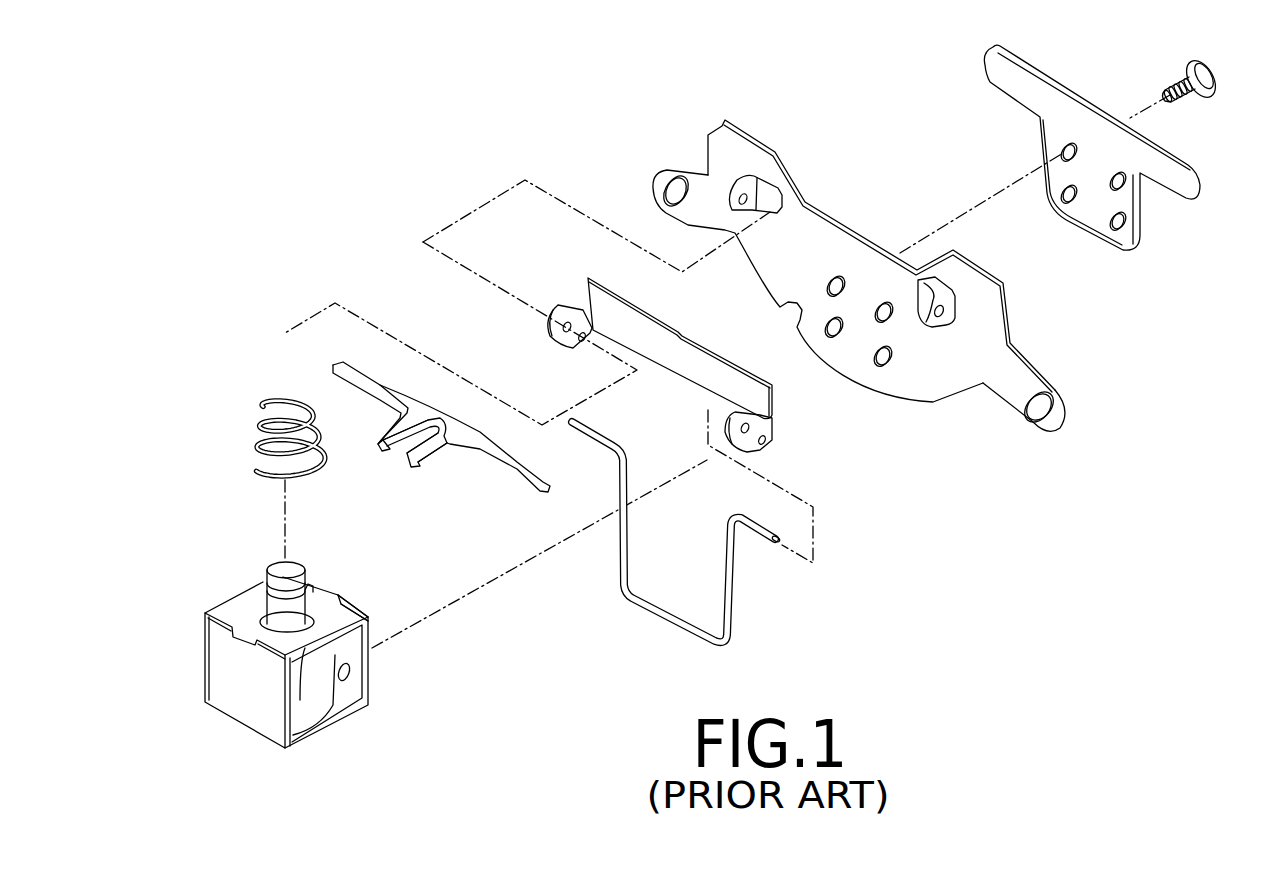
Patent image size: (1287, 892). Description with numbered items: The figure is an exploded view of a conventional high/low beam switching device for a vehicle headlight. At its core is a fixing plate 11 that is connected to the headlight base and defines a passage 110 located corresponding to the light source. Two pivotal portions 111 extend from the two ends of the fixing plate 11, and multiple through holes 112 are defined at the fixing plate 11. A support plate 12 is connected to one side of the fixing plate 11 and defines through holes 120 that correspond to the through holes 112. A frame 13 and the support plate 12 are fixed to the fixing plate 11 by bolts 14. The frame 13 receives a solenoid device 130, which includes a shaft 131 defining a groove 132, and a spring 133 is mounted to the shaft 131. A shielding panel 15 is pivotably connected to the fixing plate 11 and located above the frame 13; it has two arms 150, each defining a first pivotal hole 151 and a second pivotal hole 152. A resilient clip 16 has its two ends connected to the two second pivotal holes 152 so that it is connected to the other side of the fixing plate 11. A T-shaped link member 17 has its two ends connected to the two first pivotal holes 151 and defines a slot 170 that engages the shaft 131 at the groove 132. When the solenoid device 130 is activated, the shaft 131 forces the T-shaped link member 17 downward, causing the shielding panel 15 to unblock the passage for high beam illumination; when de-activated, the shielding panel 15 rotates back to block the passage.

The fixing plate 11 is at (958, 383).
The passage 110 is at (860, 220).
The pivotal portion 111 is at (950, 307).
The through hole 112 is at (887, 363).
The support plate 12 is at (1100, 123).
The through hole 120 is at (1123, 220).
The bolt 14 is at (1217, 78).
The frame 13 is at (248, 718).
The solenoid device 130 is at (320, 703).
The shaft 131 is at (273, 607).
The groove 132 is at (340, 603).
The spring 133 is at (247, 450).
The shielding panel 15 is at (667, 362).
The arm 150 is at (560, 335).
The first pivotal hole 151 is at (562, 318).
The second pivotal hole 152 is at (580, 350).
The resilient clip 16 is at (653, 607).
The T-shaped link member 17 is at (483, 443).
The slot 170 is at (412, 440).